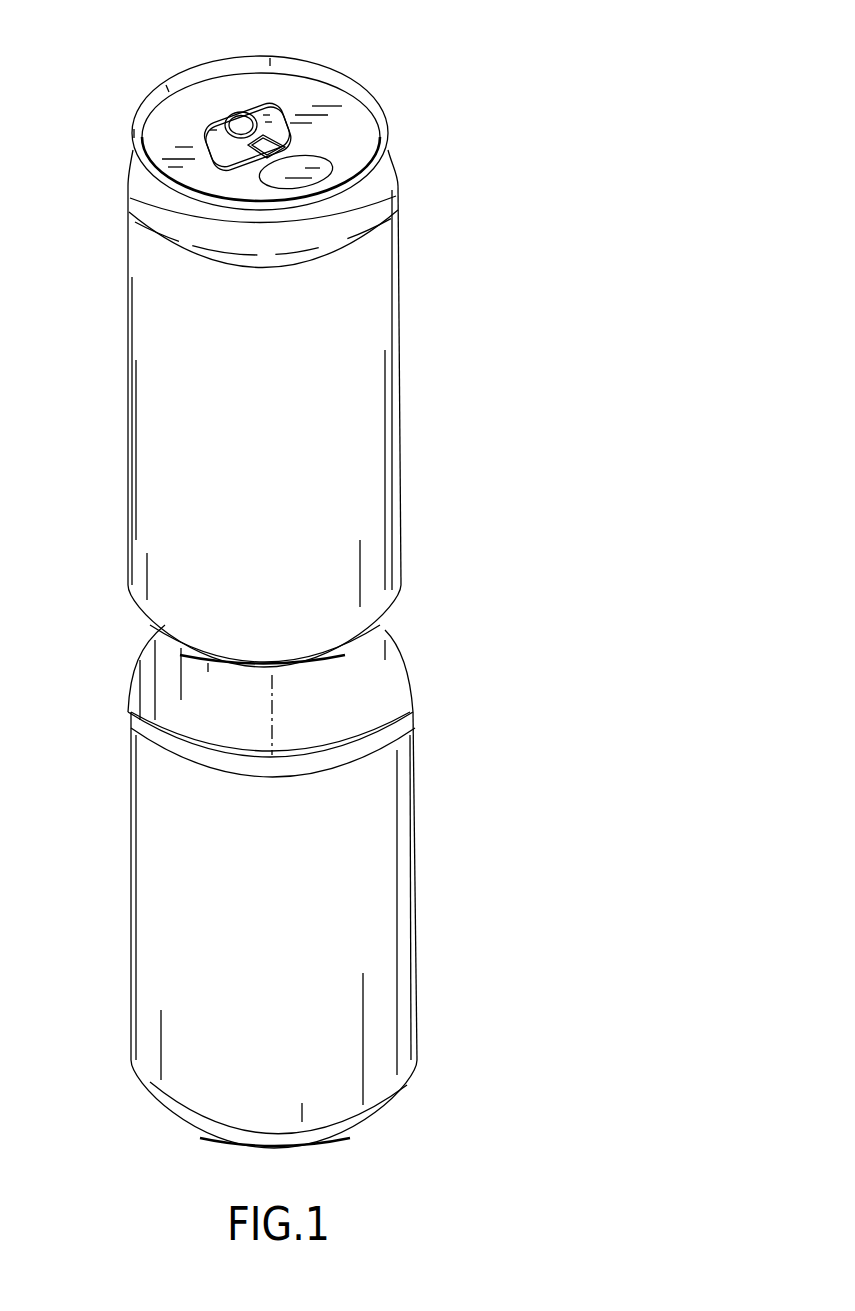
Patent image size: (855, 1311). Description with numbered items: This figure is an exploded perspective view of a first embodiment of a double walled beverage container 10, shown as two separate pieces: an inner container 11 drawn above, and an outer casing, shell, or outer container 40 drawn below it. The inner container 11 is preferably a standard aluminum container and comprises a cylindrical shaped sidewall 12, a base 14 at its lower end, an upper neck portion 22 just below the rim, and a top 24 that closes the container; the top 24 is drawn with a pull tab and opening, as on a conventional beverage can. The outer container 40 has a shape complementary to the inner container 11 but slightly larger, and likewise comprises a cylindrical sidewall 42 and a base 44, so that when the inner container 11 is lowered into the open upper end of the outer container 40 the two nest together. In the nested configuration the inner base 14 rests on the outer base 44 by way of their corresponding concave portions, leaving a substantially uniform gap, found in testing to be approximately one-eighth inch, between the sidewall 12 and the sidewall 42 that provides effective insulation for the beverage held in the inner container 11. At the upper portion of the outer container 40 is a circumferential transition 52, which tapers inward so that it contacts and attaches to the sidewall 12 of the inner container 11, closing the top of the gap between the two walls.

The double walled beverage container 10 is at (396, 575).
The inner container 11 is at (283, 334).
The cylindrical shaped sidewall 12 is at (275, 377).
The base 14 is at (287, 655).
The upper neck portion 22 is at (133, 183).
The top 24 is at (230, 83).
The outer container 40 is at (306, 886).
The cylindrical sidewall 42 is at (284, 915).
The base 44 is at (237, 1138).
The circumferential transition 52 is at (135, 697).